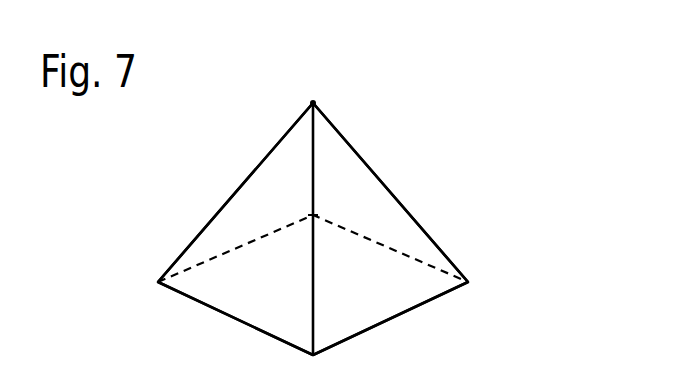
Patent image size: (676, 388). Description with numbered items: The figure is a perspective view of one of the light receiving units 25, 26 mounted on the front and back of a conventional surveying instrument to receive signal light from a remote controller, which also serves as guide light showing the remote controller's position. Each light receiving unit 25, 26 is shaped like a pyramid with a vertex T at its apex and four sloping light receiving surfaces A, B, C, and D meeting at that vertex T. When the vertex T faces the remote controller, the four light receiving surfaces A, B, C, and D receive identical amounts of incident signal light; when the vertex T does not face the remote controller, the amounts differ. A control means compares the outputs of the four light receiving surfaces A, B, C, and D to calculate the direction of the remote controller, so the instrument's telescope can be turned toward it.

The light receiving unit 25 is at (351, 229).
The light receiving unit 26 is at (385, 172).
The vertex T is at (313, 103).
The light receiving surface A is at (388, 308).
The light receiving surface B is at (240, 308).
The light receiving surface C is at (233, 210).
The light receiving surface D is at (427, 228).